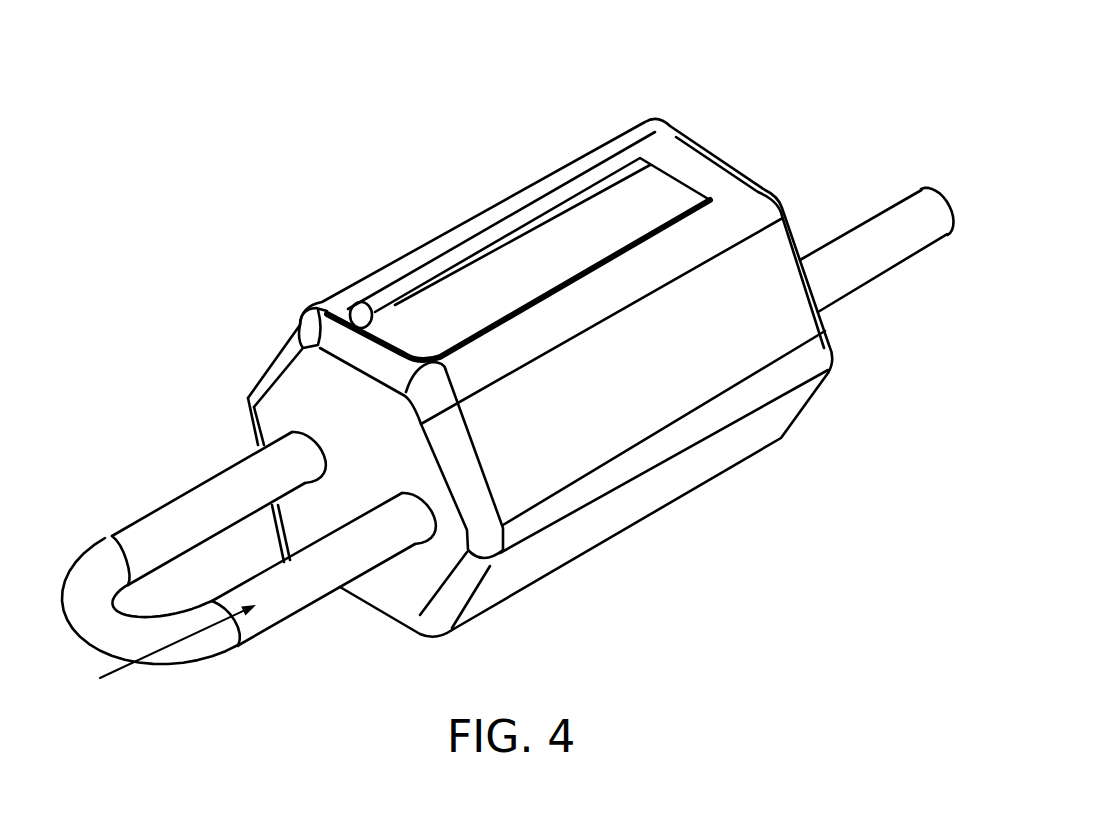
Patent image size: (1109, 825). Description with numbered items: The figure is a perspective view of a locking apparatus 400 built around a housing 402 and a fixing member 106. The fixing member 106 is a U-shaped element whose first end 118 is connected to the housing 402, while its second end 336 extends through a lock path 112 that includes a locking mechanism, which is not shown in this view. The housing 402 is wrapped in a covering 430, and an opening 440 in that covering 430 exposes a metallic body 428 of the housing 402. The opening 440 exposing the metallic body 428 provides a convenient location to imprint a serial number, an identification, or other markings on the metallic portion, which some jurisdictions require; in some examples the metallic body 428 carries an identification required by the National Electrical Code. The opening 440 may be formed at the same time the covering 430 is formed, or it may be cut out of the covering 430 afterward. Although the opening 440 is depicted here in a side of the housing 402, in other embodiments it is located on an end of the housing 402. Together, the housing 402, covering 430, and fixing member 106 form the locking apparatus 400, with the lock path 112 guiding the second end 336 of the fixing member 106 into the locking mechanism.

The locking apparatus 400 is at (174, 194).
The housing 402 is at (317, 267).
The opening 440 is at (498, 270).
The metallic body 428 is at (593, 242).
The covering 430 is at (653, 387).
The second end 336 is at (923, 223).
The fixing member 106 is at (170, 522).
The first end 118 is at (285, 470).
The lock path 112 is at (162, 660).